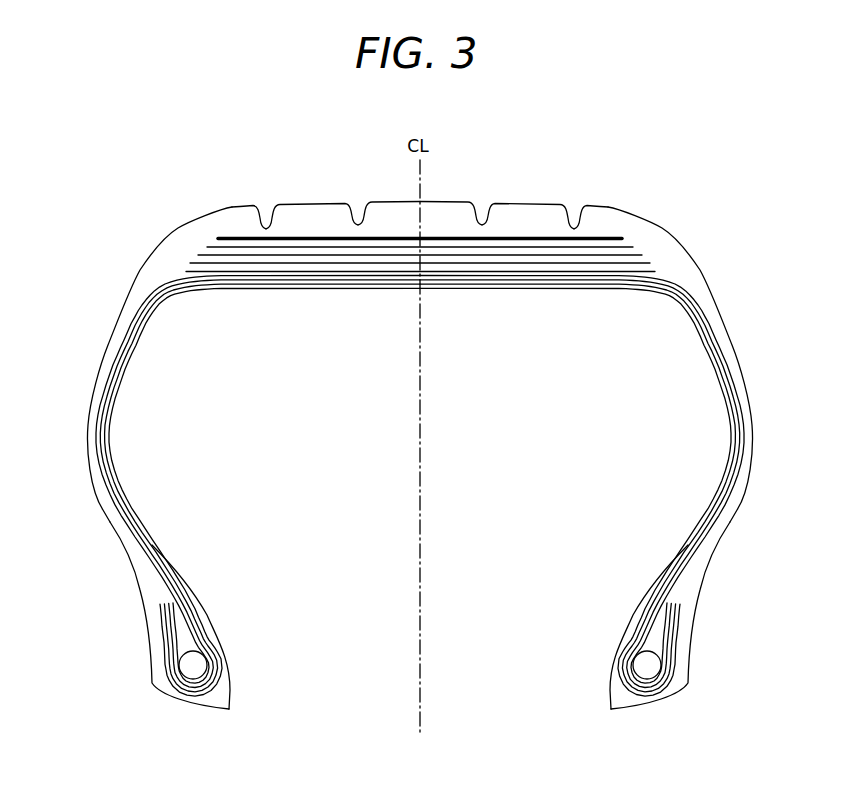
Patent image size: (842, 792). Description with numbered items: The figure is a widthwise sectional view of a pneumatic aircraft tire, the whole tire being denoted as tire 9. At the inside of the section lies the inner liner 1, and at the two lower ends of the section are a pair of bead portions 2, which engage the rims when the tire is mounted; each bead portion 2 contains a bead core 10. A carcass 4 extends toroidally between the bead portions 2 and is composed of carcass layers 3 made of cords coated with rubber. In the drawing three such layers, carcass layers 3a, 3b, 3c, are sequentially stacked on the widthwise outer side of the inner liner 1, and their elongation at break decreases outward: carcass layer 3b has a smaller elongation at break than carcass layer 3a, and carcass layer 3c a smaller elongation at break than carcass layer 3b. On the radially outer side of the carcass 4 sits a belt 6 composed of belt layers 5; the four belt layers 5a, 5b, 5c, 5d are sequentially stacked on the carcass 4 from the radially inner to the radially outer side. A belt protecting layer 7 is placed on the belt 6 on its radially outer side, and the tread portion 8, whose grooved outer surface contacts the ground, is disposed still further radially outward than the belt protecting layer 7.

The inner liner 1 is at (128, 363).
The bead portion 2 is at (138, 620).
The carcass layer 3 is at (163, 297).
The carcass layer 3a is at (113, 380).
The carcass layer 3b is at (120, 355).
The carcass layer 3c is at (130, 330).
The carcass 4 is at (63, 275).
The belt layer 5 is at (602, 247).
The belt layer 5a is at (655, 272).
The belt layer 5b is at (650, 262).
The belt layer 5c is at (642, 254).
The belt layer 5d is at (633, 246).
The belt 6 is at (767, 175).
The belt protecting layer 7 is at (535, 237).
The tread portion 8 is at (450, 197).
The tire 9 is at (267, 165).
The bead core 10 is at (194, 665).